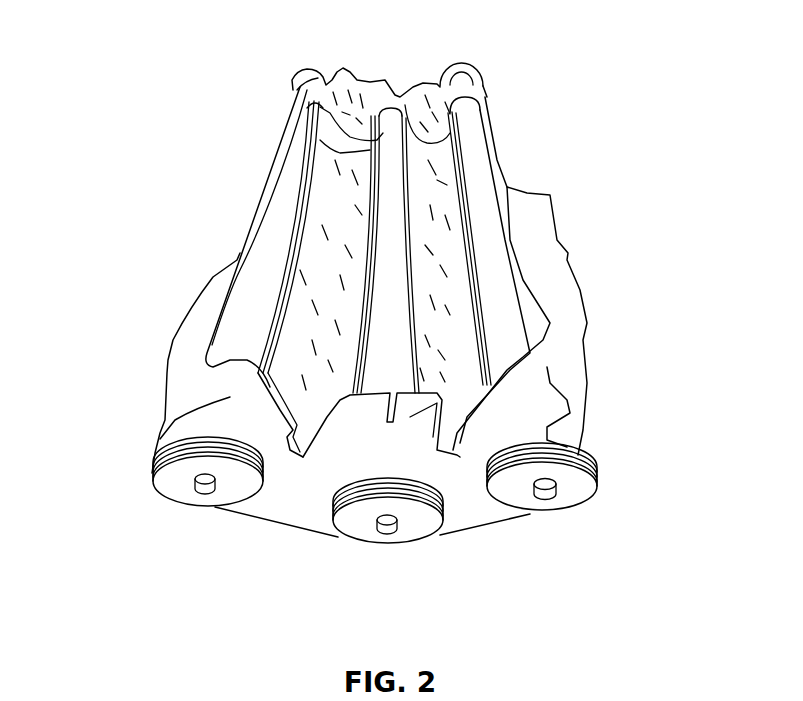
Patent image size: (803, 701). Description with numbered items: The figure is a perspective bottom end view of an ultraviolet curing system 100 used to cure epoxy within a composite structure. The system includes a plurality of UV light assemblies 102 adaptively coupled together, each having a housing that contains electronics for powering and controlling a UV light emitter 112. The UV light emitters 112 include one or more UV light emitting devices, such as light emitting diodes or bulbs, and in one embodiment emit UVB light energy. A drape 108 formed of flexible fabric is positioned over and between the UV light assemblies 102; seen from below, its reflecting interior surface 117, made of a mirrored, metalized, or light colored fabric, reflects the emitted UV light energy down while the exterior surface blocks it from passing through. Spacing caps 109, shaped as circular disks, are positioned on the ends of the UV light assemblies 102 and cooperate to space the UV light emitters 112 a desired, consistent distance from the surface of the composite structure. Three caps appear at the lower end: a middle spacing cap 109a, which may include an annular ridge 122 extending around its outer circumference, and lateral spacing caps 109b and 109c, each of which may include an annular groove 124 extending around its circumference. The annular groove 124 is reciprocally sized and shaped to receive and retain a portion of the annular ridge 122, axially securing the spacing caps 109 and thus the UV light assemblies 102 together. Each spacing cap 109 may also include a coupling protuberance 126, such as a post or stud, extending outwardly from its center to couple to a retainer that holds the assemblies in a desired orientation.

The ultraviolet curing system 100 is at (250, 68).
The UV light assemblies 102 is at (292, 190).
The drape 108 is at (160, 439).
The spacing caps 109 is at (325, 72).
The middle spacing cap 109a is at (367, 532).
The lateral spacing cap 109b is at (232, 492).
The lateral spacing cap 109c is at (523, 493).
The UV light emitters 112 is at (400, 107).
The reflecting interior surface 117 is at (323, 320).
The annular ridge 122 is at (340, 486).
The annular groove 124 is at (158, 470).
The coupling protuberance 126 is at (193, 490).